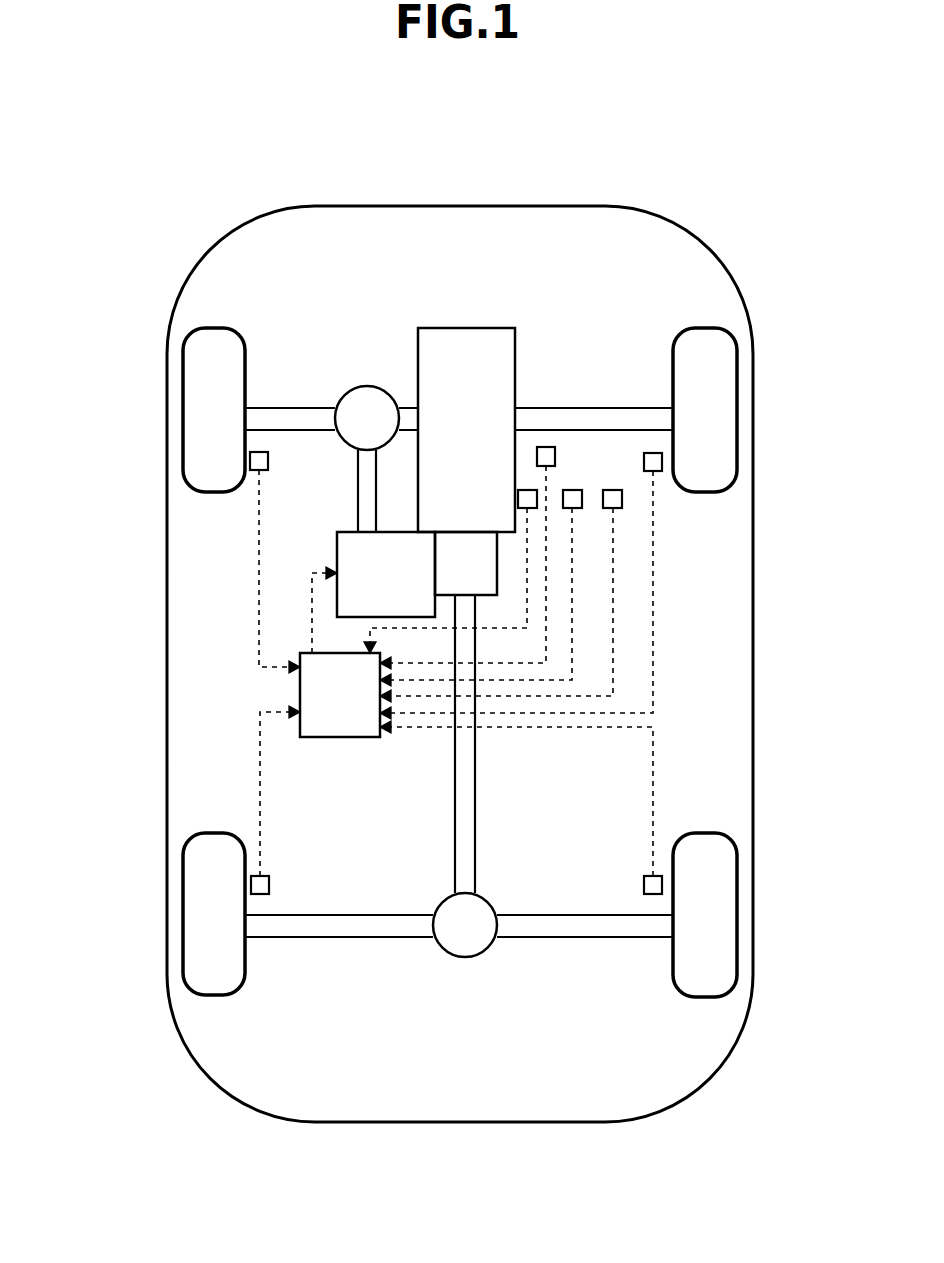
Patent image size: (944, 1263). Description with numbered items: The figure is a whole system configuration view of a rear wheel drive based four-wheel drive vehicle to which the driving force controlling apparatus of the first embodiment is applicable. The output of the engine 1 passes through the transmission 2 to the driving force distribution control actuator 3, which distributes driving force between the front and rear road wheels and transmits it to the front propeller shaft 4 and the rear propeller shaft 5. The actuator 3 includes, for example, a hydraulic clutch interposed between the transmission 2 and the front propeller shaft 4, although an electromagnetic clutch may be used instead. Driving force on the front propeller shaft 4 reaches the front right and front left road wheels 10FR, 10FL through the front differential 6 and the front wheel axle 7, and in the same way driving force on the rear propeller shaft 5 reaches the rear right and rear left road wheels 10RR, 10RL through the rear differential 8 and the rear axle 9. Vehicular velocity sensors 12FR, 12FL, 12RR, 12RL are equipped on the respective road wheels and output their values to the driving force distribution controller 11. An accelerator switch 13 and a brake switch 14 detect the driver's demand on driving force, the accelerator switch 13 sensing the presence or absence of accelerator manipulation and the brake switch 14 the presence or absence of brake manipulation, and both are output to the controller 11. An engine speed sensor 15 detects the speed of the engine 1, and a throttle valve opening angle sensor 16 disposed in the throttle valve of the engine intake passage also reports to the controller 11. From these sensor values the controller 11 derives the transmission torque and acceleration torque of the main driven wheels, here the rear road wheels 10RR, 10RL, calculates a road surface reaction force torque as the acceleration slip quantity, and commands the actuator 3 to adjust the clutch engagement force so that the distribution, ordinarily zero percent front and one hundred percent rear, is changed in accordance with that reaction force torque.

The engine 1 is at (447, 348).
The transmission 2 is at (480, 573).
The driving force distribution control actuator 3 is at (358, 595).
The front propeller shaft 4 is at (365, 502).
The rear propeller shaft 5 is at (466, 800).
The front differential 6 is at (363, 405).
The front wheel axle 7 is at (627, 405).
The rear differential 8 is at (470, 947).
The rear axle 9 is at (372, 937).
The front left road wheel 10FL is at (203, 380).
The front right road wheel 10FR is at (722, 392).
The rear left road wheel 10RL is at (205, 932).
The rear right road wheel 10RR is at (722, 945).
The driving force distribution controller 11 is at (312, 690).
The vehicular velocity sensor 12FL is at (252, 464).
The vehicular velocity sensor 12FR is at (663, 462).
The vehicular velocity sensor 12RL is at (270, 884).
The vehicular velocity sensor 12RR is at (644, 886).
The accelerator switch 13 is at (622, 503).
The brake switch 14 is at (573, 503).
The engine speed sensor 15 is at (524, 490).
The throttle valve opening angle sensor 16 is at (548, 447).